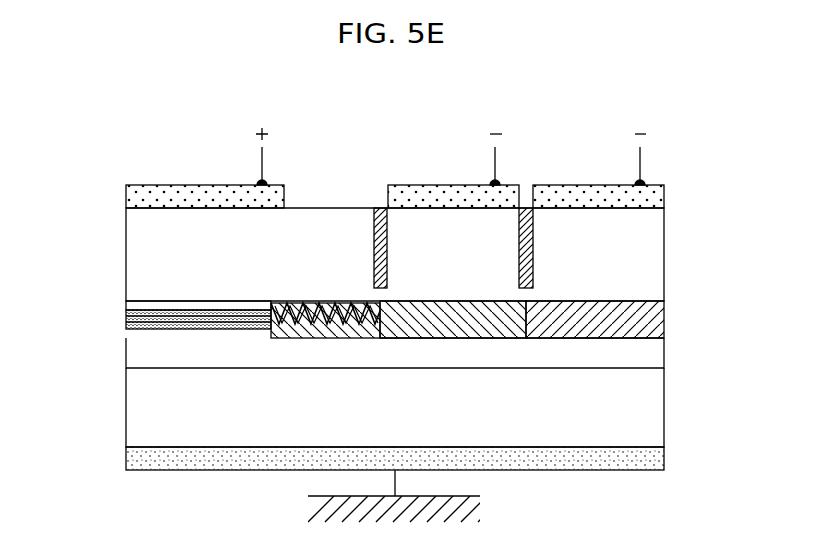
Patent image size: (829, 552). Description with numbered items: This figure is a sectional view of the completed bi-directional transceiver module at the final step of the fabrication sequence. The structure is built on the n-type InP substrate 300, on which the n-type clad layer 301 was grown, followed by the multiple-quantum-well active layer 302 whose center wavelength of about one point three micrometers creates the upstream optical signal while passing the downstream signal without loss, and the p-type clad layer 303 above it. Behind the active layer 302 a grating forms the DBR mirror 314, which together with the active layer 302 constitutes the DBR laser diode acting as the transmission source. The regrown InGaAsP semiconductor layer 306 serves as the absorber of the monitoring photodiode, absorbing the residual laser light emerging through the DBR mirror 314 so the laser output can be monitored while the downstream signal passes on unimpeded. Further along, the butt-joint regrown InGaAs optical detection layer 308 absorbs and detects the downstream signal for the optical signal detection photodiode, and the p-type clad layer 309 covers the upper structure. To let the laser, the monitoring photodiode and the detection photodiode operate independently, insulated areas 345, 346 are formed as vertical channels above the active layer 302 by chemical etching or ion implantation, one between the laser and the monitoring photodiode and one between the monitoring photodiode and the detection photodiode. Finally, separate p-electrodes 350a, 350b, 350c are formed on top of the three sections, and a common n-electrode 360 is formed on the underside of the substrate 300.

The n-type InP substrate 300 is at (657, 406).
The n-type clad layer 301 is at (657, 354).
The active layer 302 is at (130, 328).
The p-type clad layer 303 is at (132, 305).
The semiconductor layer 306 is at (509, 323).
The InGaAs optical detection layer 308 is at (657, 319).
The p-type clad layer 309 is at (657, 290).
The DBR mirror 314 is at (322, 303).
The insulated area 345 is at (387, 262).
The insulated area 346 is at (533, 232).
The p-electrode 350a is at (206, 185).
The p-electrode 350b is at (451, 185).
The p-electrode 350c is at (594, 185).
The common n-electrode 360 is at (657, 458).